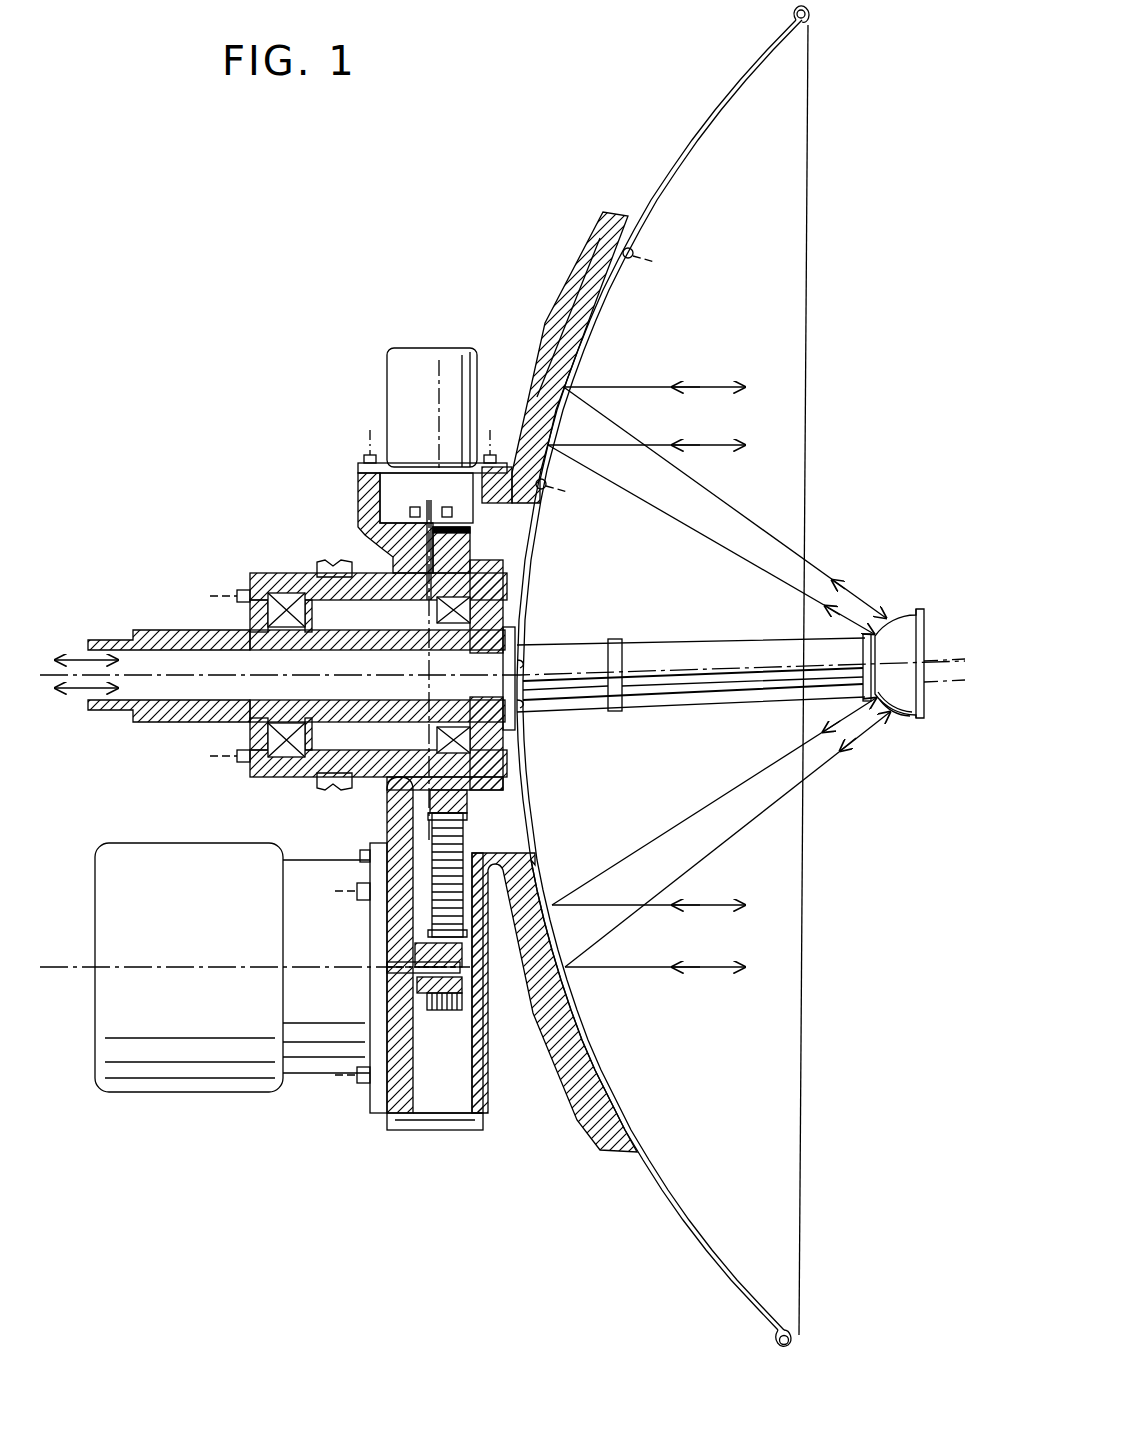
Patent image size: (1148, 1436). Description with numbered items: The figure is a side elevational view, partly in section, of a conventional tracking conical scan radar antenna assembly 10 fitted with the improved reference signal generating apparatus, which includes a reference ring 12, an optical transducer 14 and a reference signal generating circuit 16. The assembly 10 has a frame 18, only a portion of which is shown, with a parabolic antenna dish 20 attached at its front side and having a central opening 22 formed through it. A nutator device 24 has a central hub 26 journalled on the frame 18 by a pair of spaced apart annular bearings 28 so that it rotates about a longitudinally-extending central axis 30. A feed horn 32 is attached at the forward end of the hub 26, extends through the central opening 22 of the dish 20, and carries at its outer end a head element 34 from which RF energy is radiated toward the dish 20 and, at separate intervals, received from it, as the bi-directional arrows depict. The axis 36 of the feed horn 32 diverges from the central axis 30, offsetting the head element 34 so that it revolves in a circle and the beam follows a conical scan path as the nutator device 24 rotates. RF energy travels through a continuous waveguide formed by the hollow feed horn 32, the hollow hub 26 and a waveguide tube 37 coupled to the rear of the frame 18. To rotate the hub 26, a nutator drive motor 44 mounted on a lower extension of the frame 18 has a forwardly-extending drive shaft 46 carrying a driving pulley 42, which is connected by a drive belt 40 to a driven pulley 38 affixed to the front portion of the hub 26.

The tracking conical scan radar antenna assembly 10 is at (238, 288).
The reference ring 12 is at (427, 538).
The optical transducer 14 is at (449, 505).
The reference signal generating circuit 16 is at (387, 367).
The frame 18 is at (266, 787).
The parabolic antenna dish 20 is at (690, 140).
The central opening 22 is at (528, 633).
The nutator device 24 is at (379, 744).
The central hub 26 is at (328, 733).
The annular bearings 28 is at (315, 578).
The central axis 30 is at (945, 685).
The feed horn 32 is at (665, 640).
The head element 34 is at (897, 717).
The axis of the feed horn 36 is at (936, 660).
The waveguide tube 37 is at (173, 722).
The driven pulley 38 is at (503, 790).
The drive belt 40 is at (460, 852).
The driving pulley 42 is at (460, 1007).
The nutator drive motor 44 is at (112, 908).
The drive shaft 46 is at (405, 980).